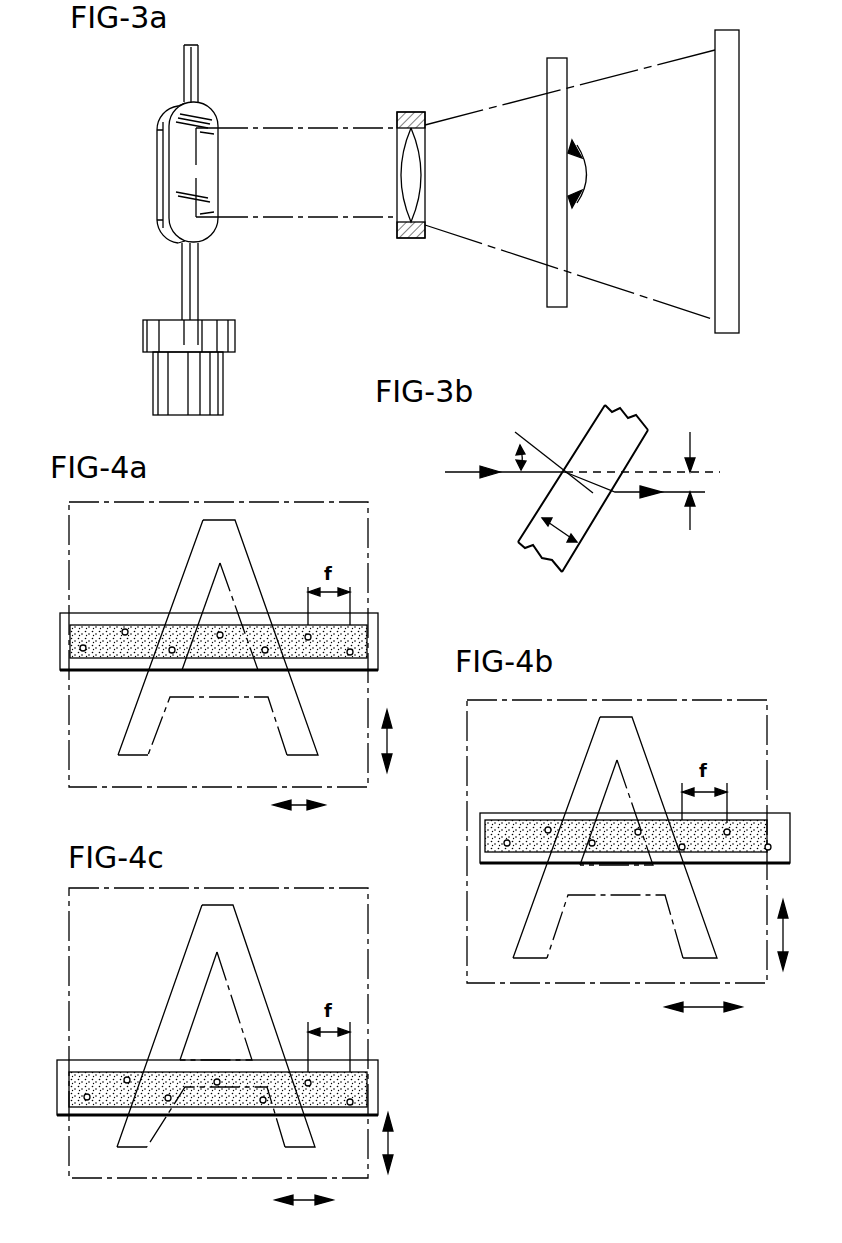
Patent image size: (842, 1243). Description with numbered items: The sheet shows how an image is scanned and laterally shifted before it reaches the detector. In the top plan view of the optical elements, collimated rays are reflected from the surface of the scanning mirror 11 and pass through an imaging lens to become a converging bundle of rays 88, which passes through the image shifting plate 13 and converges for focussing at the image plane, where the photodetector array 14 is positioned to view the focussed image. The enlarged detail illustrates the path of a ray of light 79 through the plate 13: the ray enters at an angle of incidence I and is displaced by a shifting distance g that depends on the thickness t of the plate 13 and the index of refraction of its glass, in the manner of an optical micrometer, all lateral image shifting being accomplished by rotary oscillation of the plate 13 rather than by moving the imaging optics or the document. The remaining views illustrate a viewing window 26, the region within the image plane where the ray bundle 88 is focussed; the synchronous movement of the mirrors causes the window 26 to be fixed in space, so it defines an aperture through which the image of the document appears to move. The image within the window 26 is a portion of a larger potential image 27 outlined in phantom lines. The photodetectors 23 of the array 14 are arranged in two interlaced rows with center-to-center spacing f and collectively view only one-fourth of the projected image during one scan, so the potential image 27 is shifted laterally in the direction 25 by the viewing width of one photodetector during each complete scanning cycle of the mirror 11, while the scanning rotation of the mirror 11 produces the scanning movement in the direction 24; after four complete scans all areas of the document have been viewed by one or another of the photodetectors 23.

In FIG. 3a, the scanning mirror 11 is at (205, 115).
In FIG. 3a, the image shifting plate 13 is at (567, 78).
In FIG. 3b, the image shifting plate 13 is at (578, 520).
In FIG. 3a, the photodetector array 14 is at (728, 38).
In FIG. 4a, the photodetector array 14 is at (372, 623).
In FIG. 4b, the photodetector array 14 is at (775, 832).
In FIG. 4c, the photodetector array 14 is at (370, 1073).
In FIG. 3a, the converging bundle of rays 88 is at (500, 130).
In FIG. 3b, the incident light ray 79 is at (465, 472).
In FIG. 4a, the photodetectors 23 is at (125, 632).
In FIG. 4b, the photodetectors 23 is at (548, 830).
In FIG. 4c, the photodetectors 23 is at (127, 1080).
In FIG. 4a, the scanning direction 24 is at (390, 742).
In FIG. 4b, the scanning direction 24 is at (785, 955).
In FIG. 4c, the scanning direction 24 is at (390, 1152).
In FIG. 4a, the shifting direction 25 is at (300, 810).
In FIG. 4b, the shifting direction 25 is at (705, 1010).
In FIG. 4c, the shifting direction 25 is at (303, 1200).
In FIG. 4a, the viewing window 26 is at (118, 650).
In FIG. 4b, the viewing window 26 is at (480, 835).
In FIG. 4c, the viewing window 26 is at (108, 1095).
In FIG. 4a, the potential image 27 is at (255, 770).
In FIG. 4b, the potential image 27 is at (645, 972).
In FIG. 4c, the potential image 27 is at (190, 1168).